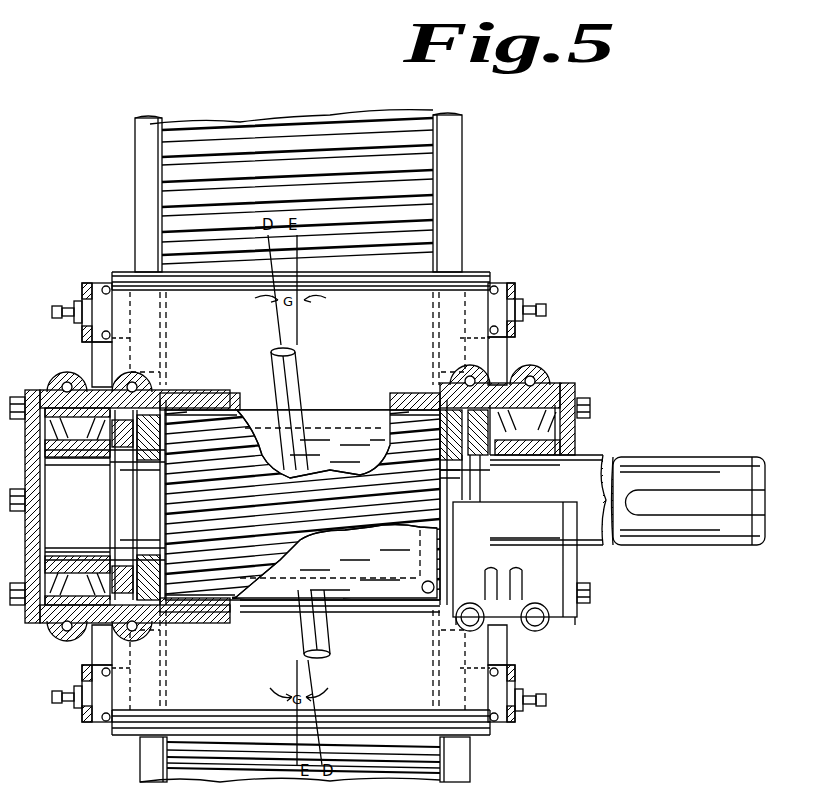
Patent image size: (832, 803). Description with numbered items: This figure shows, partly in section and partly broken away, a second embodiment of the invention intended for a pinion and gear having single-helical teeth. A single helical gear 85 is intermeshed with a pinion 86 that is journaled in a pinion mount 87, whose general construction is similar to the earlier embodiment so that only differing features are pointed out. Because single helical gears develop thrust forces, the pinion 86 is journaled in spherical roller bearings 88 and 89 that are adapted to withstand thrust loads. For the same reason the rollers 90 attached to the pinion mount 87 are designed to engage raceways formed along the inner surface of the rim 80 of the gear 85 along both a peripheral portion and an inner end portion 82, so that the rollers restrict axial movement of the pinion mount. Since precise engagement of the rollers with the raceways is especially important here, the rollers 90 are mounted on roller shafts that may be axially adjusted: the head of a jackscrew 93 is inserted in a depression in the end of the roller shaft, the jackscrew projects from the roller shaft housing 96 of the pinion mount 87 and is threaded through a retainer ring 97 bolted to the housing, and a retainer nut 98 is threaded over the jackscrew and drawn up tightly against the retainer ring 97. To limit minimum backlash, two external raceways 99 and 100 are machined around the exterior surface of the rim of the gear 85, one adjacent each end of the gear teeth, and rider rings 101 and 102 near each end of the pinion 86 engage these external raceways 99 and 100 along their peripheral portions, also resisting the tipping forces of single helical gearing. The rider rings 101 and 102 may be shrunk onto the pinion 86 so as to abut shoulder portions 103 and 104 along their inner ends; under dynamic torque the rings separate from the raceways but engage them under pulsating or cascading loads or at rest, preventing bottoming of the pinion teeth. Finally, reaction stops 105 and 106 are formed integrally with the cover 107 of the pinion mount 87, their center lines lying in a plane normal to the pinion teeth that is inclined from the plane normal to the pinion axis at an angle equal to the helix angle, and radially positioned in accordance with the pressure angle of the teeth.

The rim 80 is at (135, 212).
The inner end portion 82 is at (168, 330).
The single helical gear 85 is at (342, 128).
The pinion 86 is at (410, 435).
The pinion mount 87 is at (478, 272).
The spherical roller bearing 88 is at (48, 390).
The spherical roller bearing 89 is at (550, 405).
The rollers 90 is at (162, 360).
The jackscrew 93 is at (52, 313).
The roller shaft housing 96 is at (98, 283).
The retainer ring 97 is at (84, 284).
The retainer nut 98 is at (74, 304).
The external raceway 99 is at (135, 165).
The external raceway 100 is at (462, 177).
The rider ring 101 is at (165, 405).
The rider ring 102 is at (445, 405).
The shoulder portion 103 is at (165, 485).
The shoulder portion 104 is at (445, 498).
The reaction stop 105 is at (297, 371).
The reaction stop 106 is at (330, 640).
The cover 107 is at (535, 556).